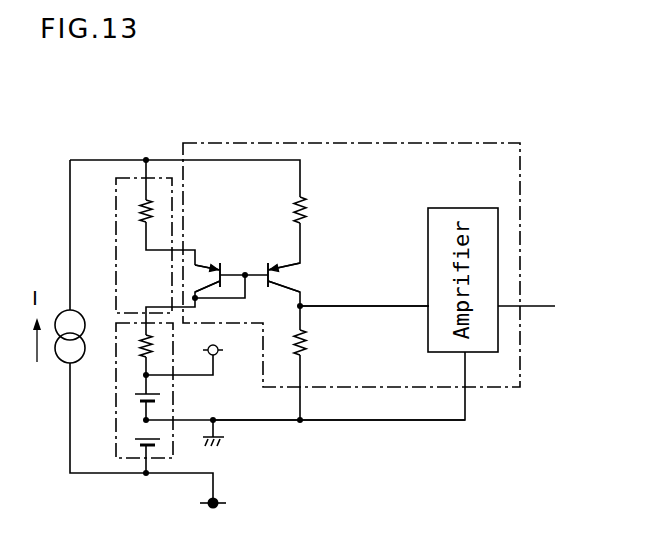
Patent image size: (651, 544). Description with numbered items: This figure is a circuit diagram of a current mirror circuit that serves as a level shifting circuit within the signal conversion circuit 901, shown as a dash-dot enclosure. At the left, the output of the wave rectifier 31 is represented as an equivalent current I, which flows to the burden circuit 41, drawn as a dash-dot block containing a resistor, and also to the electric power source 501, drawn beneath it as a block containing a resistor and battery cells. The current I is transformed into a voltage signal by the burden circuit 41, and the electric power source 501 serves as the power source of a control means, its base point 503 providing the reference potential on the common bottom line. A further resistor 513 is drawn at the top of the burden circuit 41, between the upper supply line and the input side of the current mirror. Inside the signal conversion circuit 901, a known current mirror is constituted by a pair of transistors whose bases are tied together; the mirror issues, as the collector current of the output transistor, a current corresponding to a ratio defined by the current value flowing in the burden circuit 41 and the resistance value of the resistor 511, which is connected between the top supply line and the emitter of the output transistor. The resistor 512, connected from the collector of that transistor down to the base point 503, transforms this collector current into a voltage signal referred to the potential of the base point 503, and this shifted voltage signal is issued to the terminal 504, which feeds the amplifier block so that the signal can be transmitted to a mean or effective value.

The wave rectifier 31 is at (58, 362).
The resistor 513 is at (149, 200).
The burden circuit 41 is at (116, 200).
The resistor 511 is at (306, 209).
The resistor 512 is at (306, 344).
The terminal 504 is at (397, 304).
The base point 503 is at (322, 421).
The electric power source 501 is at (116, 383).
The signal conversion circuit 901 is at (423, 143).